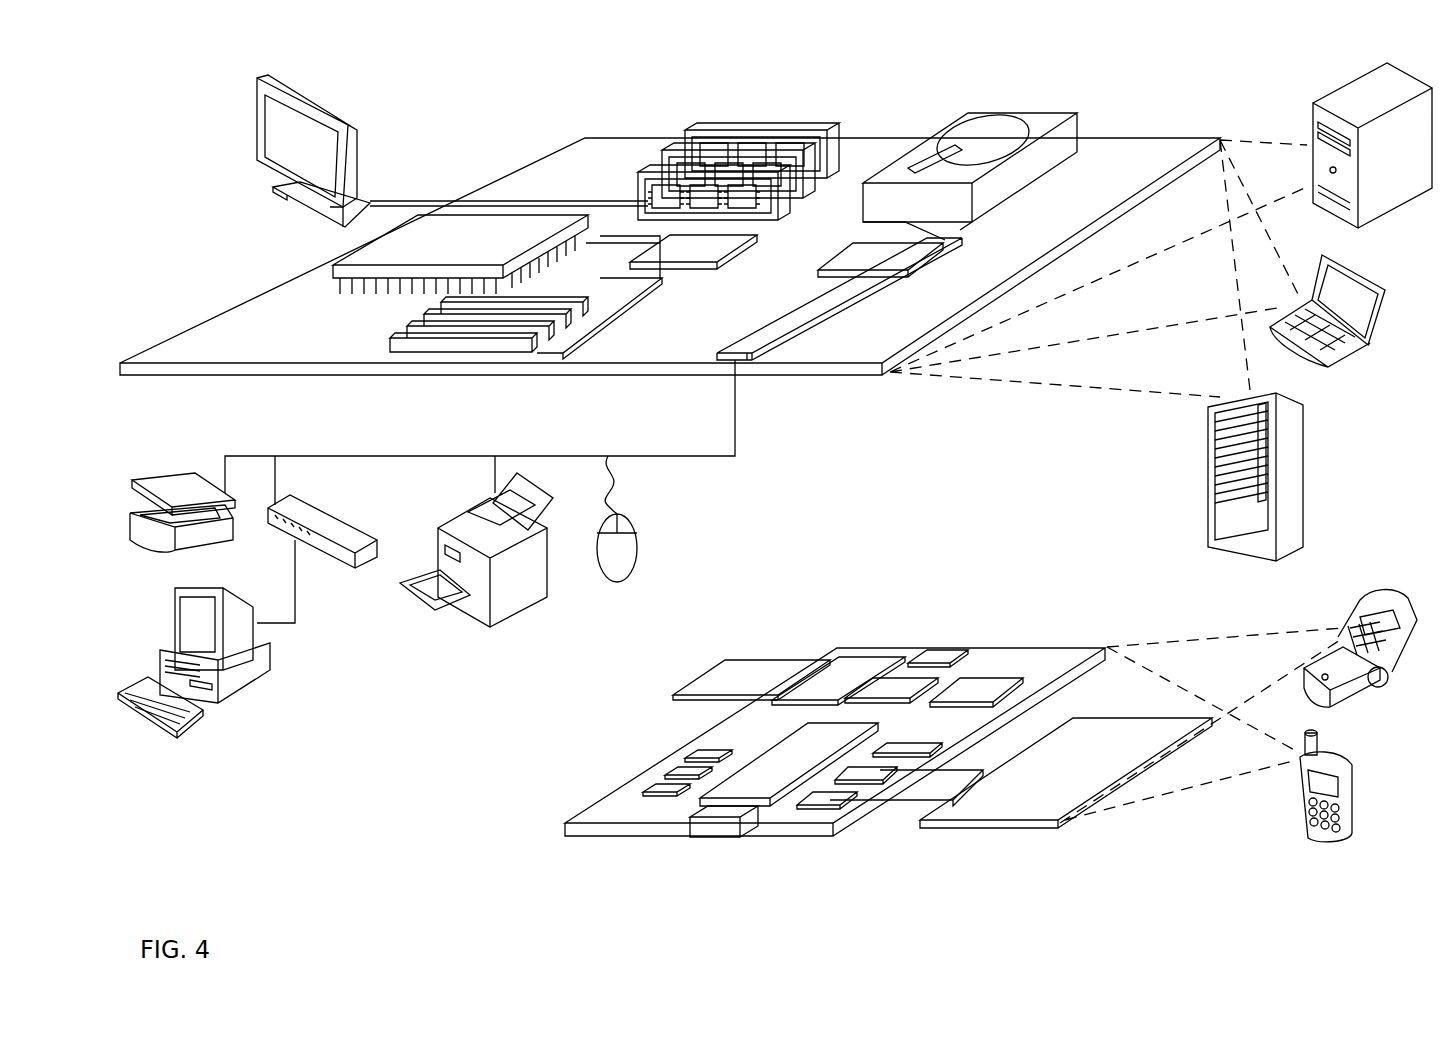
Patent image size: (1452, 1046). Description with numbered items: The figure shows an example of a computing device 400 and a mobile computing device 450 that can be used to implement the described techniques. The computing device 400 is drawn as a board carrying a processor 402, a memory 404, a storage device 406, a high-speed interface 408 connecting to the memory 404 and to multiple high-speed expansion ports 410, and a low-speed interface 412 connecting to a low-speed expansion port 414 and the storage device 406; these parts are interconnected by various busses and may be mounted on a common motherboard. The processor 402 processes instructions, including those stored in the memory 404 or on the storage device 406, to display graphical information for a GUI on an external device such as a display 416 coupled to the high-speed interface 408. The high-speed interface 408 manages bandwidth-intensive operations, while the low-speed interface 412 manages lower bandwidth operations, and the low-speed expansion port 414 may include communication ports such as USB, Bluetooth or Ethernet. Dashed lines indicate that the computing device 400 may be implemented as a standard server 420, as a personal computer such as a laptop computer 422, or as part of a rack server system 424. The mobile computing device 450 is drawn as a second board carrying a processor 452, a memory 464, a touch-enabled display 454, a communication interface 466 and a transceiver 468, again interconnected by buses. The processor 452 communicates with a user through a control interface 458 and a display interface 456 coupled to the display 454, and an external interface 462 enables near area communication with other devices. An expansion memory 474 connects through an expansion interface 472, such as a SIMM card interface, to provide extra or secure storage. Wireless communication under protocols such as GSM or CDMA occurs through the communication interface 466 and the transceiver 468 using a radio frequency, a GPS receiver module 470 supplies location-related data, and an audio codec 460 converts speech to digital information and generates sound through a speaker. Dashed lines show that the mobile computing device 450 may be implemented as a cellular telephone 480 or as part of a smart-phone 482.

The computing device 400 is at (477, 108).
The processor 402 is at (340, 270).
The memory 404 is at (700, 130).
The storage device 406 is at (970, 118).
The high-speed interface 408 is at (667, 250).
The high-speed expansion ports 410 is at (420, 332).
The low-speed interface 412 is at (857, 253).
The low-speed expansion port 414 is at (747, 362).
The display 416 is at (260, 78).
The standard server 420 is at (1313, 122).
The laptop computer 422 is at (1357, 248).
The rack server system 424 is at (1210, 503).
The mobile computing device 450 is at (540, 835).
The processor 452 is at (758, 788).
The display 454 is at (1023, 808).
The display interface 456 is at (833, 797).
The control interface 458 is at (870, 770).
The audio codec 460 is at (900, 750).
The external interface 462 is at (722, 817).
The memory 464 is at (665, 778).
The communication interface 466 is at (892, 687).
The transceiver 468 is at (978, 687).
The GPS receiver module 470 is at (948, 650).
The expansion interface 472 is at (813, 660).
The expansion memory 474 is at (728, 660).
The cellular telephone 480 is at (1360, 604).
The smart-phone 482 is at (1297, 792).